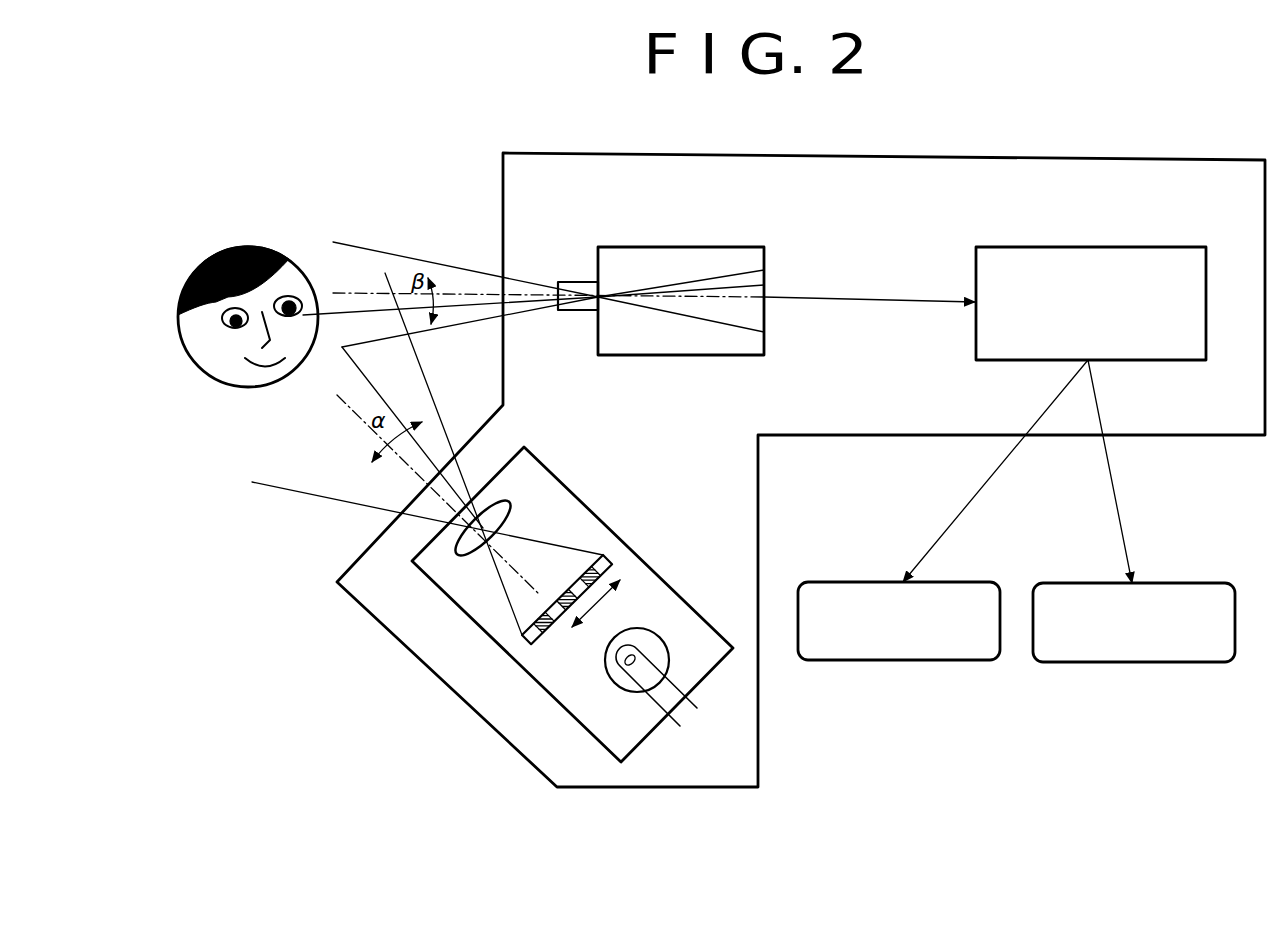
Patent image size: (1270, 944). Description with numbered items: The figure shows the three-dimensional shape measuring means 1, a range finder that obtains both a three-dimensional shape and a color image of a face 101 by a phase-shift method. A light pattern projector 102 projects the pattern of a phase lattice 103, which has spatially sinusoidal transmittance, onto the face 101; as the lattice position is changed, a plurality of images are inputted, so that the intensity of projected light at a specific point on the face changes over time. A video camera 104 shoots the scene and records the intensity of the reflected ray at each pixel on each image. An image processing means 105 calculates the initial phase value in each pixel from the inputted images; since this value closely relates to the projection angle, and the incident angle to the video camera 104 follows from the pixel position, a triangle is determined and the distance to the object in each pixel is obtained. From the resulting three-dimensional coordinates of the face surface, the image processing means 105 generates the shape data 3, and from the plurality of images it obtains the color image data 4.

The three-dimensional shape measuring means 1 is at (447, 687).
The shape data 3 is at (962, 582).
The color image data 4 is at (1175, 583).
The face 101 is at (241, 247).
The light pattern projector 102 is at (545, 460).
The phase lattice 103 is at (616, 548).
The video camera 104 is at (666, 247).
The image processing means 105 is at (1158, 247).